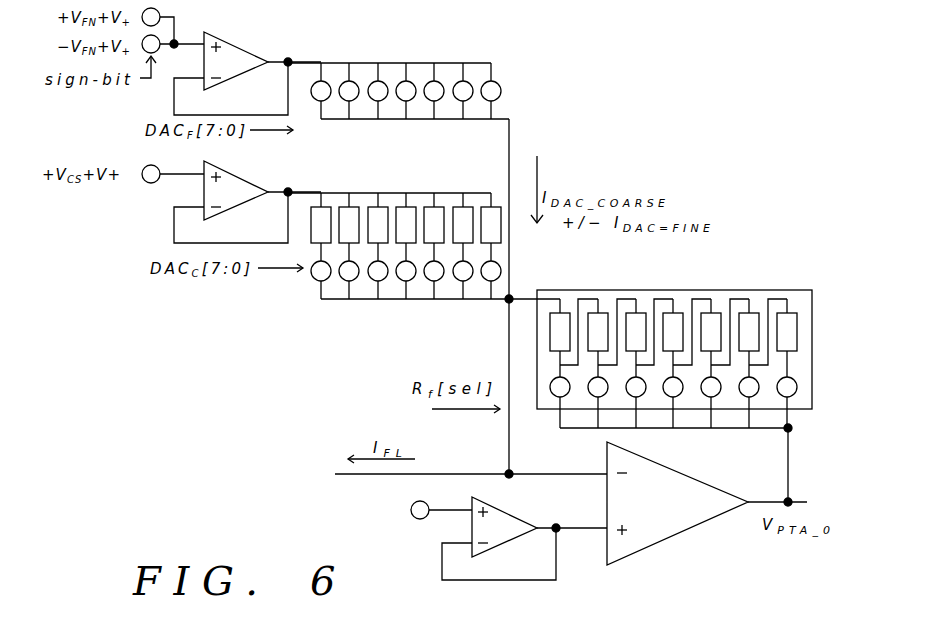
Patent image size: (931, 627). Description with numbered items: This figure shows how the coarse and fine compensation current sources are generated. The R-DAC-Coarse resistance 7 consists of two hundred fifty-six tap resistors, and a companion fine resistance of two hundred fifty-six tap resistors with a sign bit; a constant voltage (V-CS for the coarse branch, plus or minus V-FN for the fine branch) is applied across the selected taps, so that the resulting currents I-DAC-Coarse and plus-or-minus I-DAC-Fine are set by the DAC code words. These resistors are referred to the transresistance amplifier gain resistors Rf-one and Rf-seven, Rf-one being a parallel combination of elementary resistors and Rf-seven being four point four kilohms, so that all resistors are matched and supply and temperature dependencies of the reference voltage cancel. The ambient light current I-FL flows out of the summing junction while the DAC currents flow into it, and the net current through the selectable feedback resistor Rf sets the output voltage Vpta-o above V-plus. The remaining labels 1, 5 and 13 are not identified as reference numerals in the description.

The R_DAC-Coarse resistance 7 is at (388, 75).
The coarse DAC switched resistor array (Rf1) 1 is at (388, 230).
The selectable feedback resistor ladder Rf(1,3,5,7,9,11,13) 13 is at (674, 347).
The V+=1.5V reference buffer amplifier 5 is at (468, 538).